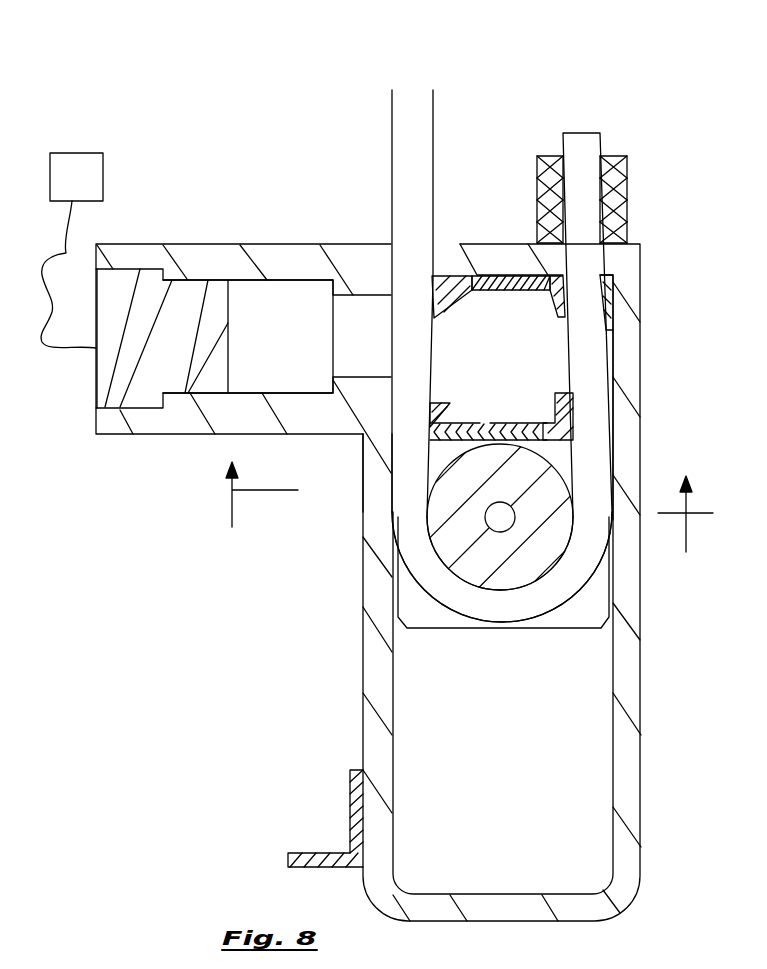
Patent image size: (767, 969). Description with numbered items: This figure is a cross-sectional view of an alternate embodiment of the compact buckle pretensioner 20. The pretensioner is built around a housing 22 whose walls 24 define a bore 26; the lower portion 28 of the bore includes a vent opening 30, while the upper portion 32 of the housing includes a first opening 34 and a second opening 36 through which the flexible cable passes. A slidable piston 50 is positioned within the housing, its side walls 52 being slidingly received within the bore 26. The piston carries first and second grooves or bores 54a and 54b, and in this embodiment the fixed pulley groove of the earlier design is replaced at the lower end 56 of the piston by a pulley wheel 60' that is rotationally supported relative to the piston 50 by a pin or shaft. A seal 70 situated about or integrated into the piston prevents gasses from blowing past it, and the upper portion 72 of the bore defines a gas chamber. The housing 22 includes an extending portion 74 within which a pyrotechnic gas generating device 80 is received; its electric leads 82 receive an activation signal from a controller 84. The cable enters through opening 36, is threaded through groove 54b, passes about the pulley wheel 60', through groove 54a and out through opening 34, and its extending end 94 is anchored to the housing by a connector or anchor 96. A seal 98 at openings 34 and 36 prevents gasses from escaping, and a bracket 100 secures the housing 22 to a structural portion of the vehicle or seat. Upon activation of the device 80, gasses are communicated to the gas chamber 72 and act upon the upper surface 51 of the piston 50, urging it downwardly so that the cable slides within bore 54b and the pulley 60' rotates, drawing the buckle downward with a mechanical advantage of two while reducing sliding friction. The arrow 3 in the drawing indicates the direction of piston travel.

The compact buckle pretensioner 20 is at (705, 298).
The housing 22 is at (623, 367).
The walls 24 is at (633, 445).
The bore 26 is at (600, 598).
The lower portion 28 is at (628, 807).
The vent opening 30 is at (523, 893).
The upper portion 32 is at (640, 250).
The first opening 34 is at (602, 250).
The second opening 36 is at (433, 282).
The direction arrow 3 is at (687, 514).
The slidable piston 50 is at (447, 633).
The upper surface 51 is at (495, 423).
The side walls 52 is at (372, 510).
The first groove or bore 54a is at (613, 417).
The second groove or bore 54b is at (382, 474).
The lower end 56 is at (578, 622).
The pulley wheel 60' is at (394, 517).
The seal 70 is at (430, 407).
The upper portion of bore (gas chamber) 72 is at (488, 366).
The extending portion 74 is at (287, 244).
The pyrotechnic gas generating device 80 is at (147, 375).
The electric leads 82 is at (67, 228).
The controller 84 is at (112, 166).
The extending end 94 is at (583, 153).
The connector or anchor 96 is at (534, 180).
The seal 98 is at (479, 288).
The bracket 100 is at (350, 785).